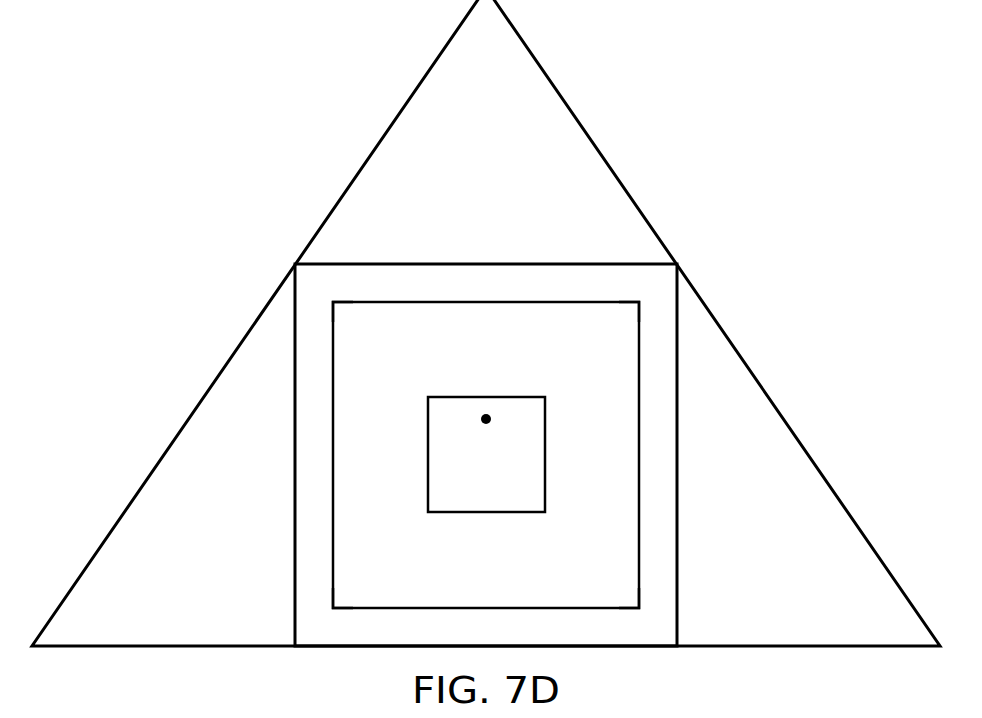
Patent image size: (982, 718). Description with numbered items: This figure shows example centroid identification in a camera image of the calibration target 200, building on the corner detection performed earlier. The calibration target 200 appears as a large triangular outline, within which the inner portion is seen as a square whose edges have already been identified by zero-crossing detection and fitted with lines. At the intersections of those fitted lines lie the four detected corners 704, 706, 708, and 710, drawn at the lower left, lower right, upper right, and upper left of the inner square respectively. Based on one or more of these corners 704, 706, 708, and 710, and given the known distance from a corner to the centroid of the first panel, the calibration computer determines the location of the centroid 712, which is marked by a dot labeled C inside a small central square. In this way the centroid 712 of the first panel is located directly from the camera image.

The calibration target 200 is at (602, 134).
The corner 704 is at (337, 600).
The corner 706 is at (636, 606).
The corner 708 is at (637, 306).
The corner 710 is at (335, 305).
The centroid 712 is at (486, 409).